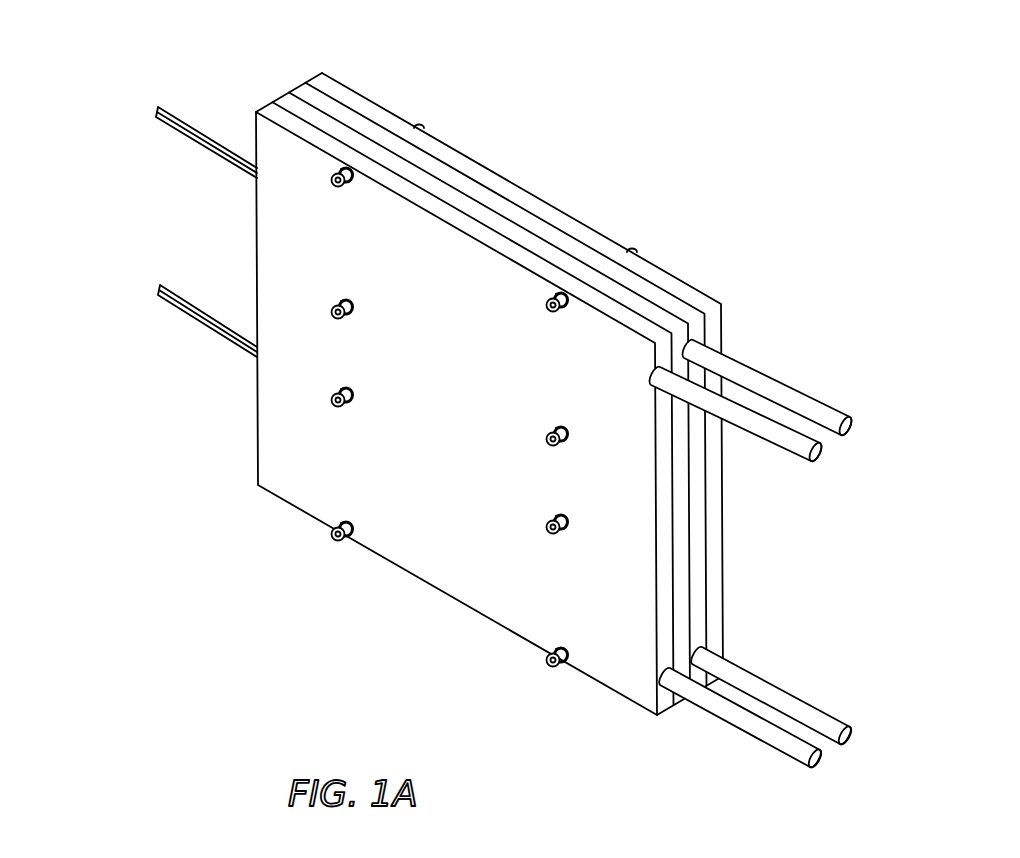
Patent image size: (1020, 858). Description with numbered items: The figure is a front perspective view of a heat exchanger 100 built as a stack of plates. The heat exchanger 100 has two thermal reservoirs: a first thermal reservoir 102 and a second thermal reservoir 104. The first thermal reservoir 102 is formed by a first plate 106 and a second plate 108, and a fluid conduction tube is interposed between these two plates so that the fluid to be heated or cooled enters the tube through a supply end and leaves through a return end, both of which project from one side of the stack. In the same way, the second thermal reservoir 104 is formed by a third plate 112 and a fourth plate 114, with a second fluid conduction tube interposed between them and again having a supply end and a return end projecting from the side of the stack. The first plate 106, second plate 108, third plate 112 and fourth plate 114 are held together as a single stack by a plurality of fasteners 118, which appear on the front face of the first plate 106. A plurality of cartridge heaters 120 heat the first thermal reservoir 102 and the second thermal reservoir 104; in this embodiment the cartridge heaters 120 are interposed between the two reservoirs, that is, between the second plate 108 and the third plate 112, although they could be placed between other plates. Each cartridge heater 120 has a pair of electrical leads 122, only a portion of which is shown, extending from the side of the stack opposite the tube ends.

The heat exchanger 100 is at (480, 412).
The first thermal reservoir 102 is at (287, 83).
The second thermal reservoir 104 is at (317, 65).
The first plate 106 is at (470, 314).
The second plate 108 is at (680, 567).
The third plate 112 is at (472, 190).
The fourth plate 114 is at (533, 205).
The fasteners 118 is at (333, 400).
The cartridge heaters 120 is at (257, 333).
The electrical leads 122 is at (158, 123).